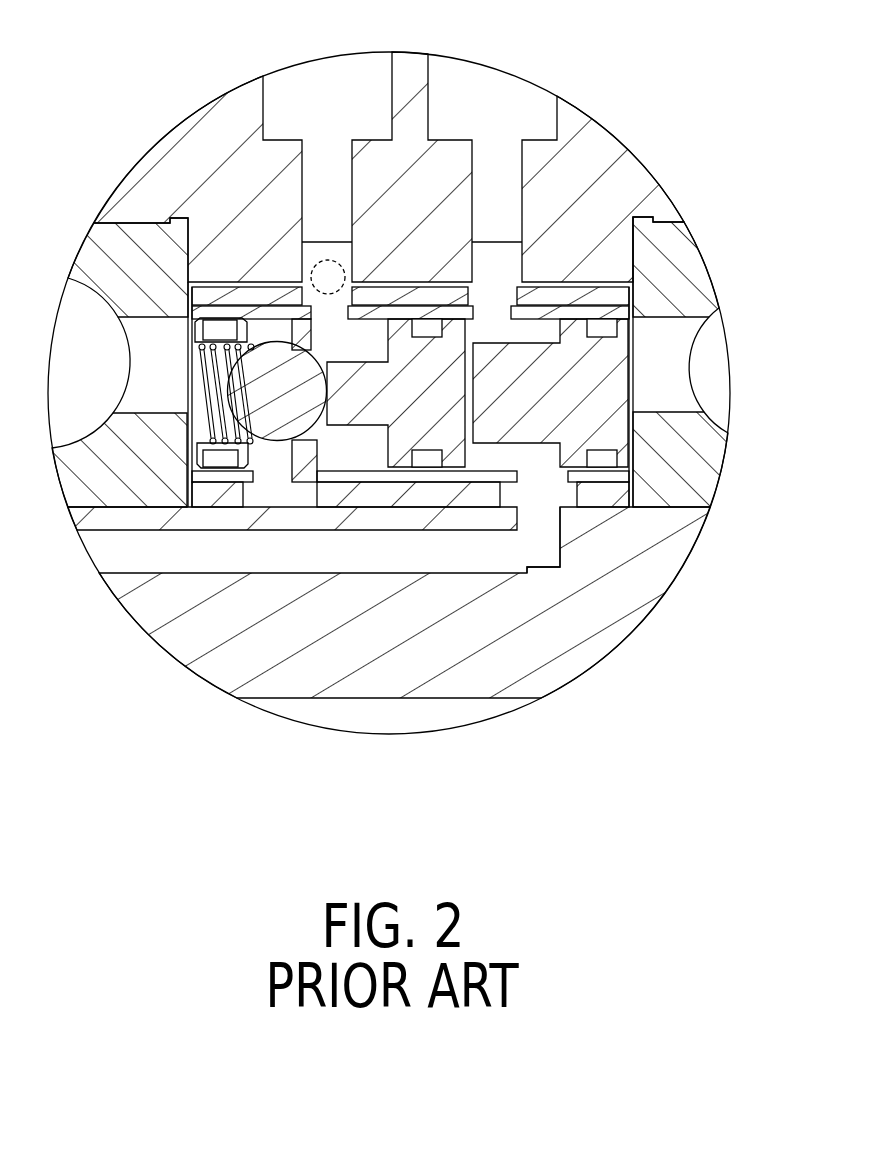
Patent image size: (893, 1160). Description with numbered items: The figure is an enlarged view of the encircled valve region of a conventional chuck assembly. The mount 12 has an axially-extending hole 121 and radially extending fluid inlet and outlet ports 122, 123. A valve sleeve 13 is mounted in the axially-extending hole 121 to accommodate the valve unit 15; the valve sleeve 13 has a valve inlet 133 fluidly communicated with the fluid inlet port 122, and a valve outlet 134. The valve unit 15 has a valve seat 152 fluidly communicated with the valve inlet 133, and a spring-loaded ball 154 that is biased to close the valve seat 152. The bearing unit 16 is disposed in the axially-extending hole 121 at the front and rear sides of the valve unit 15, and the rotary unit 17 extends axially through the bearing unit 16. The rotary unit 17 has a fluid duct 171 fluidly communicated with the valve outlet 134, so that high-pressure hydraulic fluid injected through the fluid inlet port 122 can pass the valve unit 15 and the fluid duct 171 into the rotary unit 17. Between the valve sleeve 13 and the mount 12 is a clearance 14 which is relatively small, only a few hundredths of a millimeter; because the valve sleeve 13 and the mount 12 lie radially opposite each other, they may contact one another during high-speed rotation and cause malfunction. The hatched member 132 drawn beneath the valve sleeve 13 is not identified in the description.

The mount 12 is at (645, 163).
The axially-extending hole 121 is at (597, 273).
The fluid inlet port 122 is at (332, 187).
The fluid outlet port 123 is at (502, 175).
The valve sleeve 13 is at (405, 510).
The rotor plate 132 is at (460, 482).
The valve inlet 133 is at (303, 297).
The valve outlet 134 is at (263, 496).
The clearance 14 is at (221, 283).
The valve unit 15 is at (208, 486).
The valve seat 152 is at (316, 438).
The spring-loaded ball 154 is at (277, 428).
The bearing unit 16 is at (92, 258).
The rotary unit 17 is at (647, 577).
The fluid duct 171 is at (512, 565).